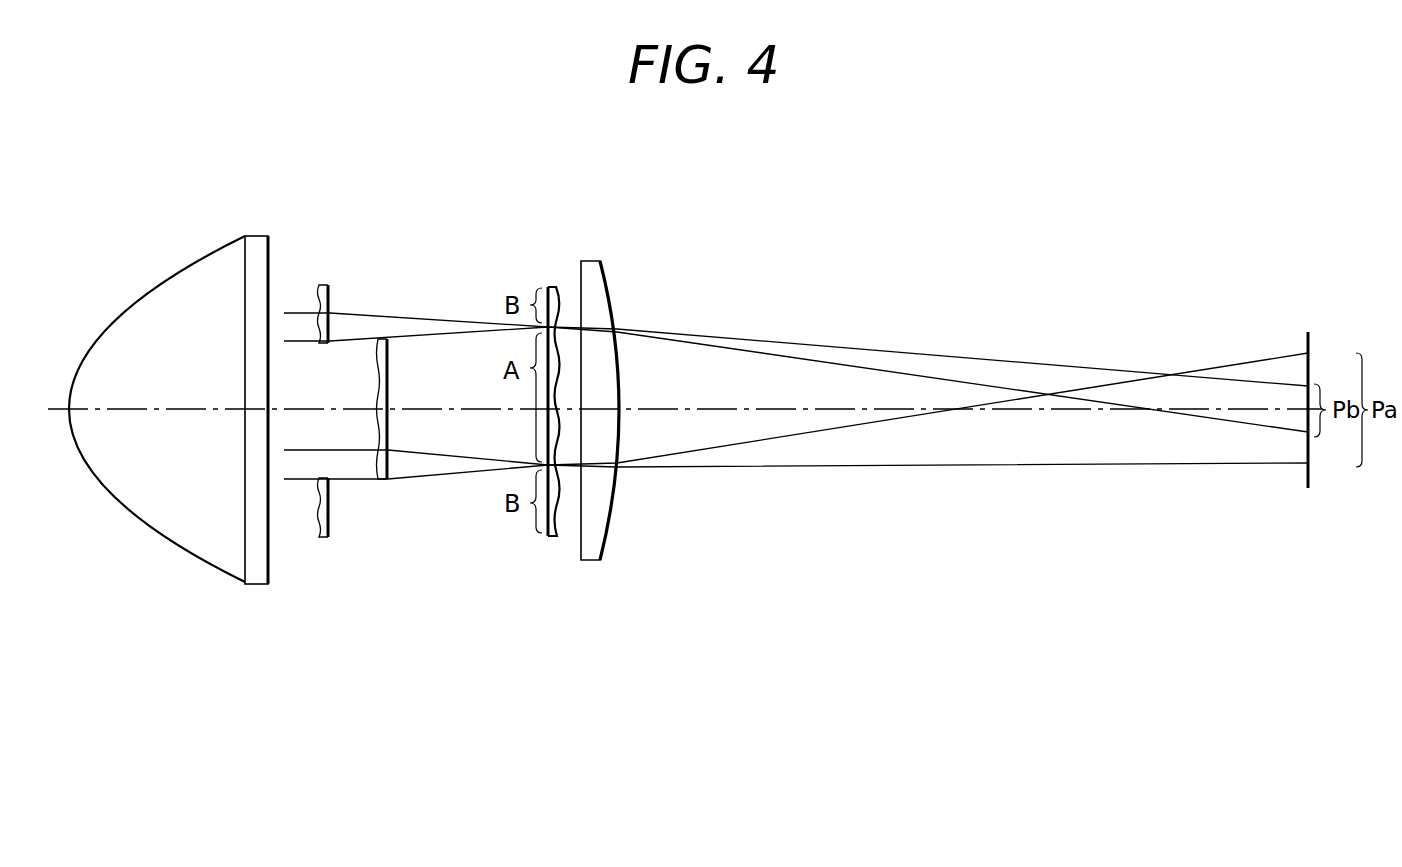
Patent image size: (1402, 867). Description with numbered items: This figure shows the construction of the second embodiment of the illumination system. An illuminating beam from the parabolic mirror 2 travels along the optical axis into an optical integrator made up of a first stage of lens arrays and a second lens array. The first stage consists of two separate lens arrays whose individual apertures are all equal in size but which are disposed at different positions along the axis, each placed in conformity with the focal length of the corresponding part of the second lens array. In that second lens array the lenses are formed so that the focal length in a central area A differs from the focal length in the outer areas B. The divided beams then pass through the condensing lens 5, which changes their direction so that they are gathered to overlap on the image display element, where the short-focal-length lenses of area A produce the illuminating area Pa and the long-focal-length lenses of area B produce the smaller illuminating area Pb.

The parabolic mirror 2 is at (206, 247).
The condensing lens 5 is at (605, 263).